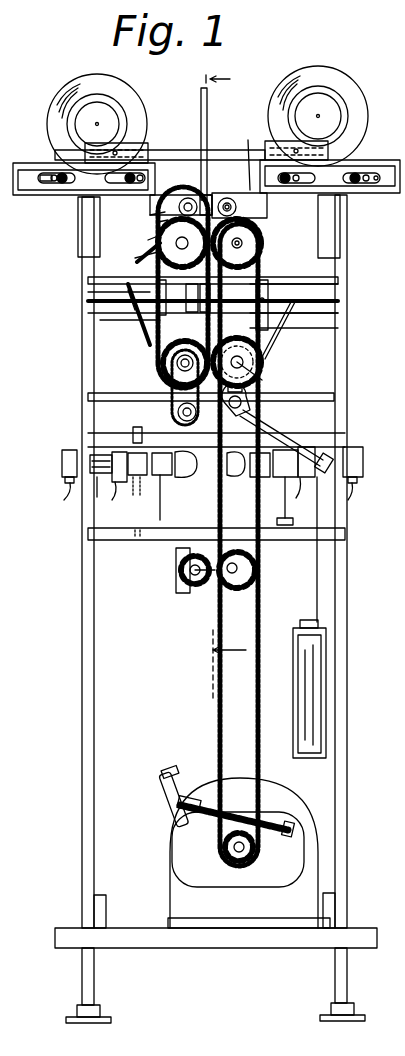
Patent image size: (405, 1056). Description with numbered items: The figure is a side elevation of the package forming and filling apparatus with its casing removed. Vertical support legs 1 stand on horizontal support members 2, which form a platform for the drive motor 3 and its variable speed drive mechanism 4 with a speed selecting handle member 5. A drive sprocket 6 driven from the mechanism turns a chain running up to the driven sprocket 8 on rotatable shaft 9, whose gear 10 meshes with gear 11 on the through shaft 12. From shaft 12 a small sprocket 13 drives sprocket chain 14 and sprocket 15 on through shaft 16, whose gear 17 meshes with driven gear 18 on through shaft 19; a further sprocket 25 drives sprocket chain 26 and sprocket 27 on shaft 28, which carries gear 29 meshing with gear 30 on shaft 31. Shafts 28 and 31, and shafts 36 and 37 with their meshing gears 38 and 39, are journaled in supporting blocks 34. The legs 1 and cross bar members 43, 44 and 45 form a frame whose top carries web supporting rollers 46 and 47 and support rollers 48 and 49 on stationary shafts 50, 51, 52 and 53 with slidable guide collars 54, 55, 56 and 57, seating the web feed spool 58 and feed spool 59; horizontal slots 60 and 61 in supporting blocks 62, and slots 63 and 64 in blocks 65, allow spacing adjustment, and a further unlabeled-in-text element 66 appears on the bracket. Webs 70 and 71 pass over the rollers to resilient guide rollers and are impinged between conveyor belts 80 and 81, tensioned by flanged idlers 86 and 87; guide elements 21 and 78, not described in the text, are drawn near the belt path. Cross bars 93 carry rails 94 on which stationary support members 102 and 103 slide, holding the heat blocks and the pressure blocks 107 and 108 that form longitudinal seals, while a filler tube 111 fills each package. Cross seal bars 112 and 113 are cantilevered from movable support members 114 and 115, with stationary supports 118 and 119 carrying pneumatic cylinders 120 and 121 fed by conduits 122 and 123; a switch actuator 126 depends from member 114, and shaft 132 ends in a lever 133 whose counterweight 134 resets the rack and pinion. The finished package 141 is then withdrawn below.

The vertical support legs 1 is at (82, 742).
The horizontal support members 2 is at (80, 208).
The drive motor 3 is at (210, 790).
The variable speed drive mechanism 4 is at (185, 841).
The speed selecting handle member 5 is at (170, 790).
The drive sprocket 6 is at (222, 848).
The driven sprocket 8 is at (262, 364).
The rotatable shaft 9 is at (262, 380).
The gear 10 is at (272, 356).
The gear 11 is at (163, 360).
The through shaft 12 is at (177, 366).
The sprocket 13 is at (150, 335).
The sprocket chain 14 is at (178, 552).
The sprocket 15 is at (188, 568).
The through shaft 16 is at (190, 582).
The gear 17 is at (205, 585).
The driven gear 18 is at (245, 558).
The rotatable through shaft 19 is at (238, 568).
The guide 21 is at (215, 297).
The sprocket 25 is at (170, 378).
The sprocket chain 26 is at (178, 398).
The sprocket 27 is at (162, 222).
The shaft 28 is at (160, 213).
The gear 29 is at (142, 178).
The gear 30 is at (215, 195).
The shaft 31 is at (237, 207).
The supporting blocks 34 is at (150, 240).
The shaft 36 is at (138, 258).
The shaft 37 is at (243, 241).
The gear 38 is at (136, 257).
The gear 39 is at (250, 252).
The cross bar members 43 is at (108, 535).
The cross bar member 44 is at (98, 398).
The cross bar member 45 is at (96, 285).
The web supporting roller 46 is at (52, 182).
The web supporting roller 47 is at (82, 240).
The support roller 48 is at (297, 182).
The support roller 49 is at (372, 195).
The stationary shaft 50 is at (50, 190).
The stationary shaft 51 is at (134, 176).
The stationary shaft 52 is at (288, 176).
The stationary shaft 53 is at (360, 172).
The slidable guide collar 54 is at (55, 173).
The slidable guide collar 55 is at (186, 196).
The slidable guide collar 56 is at (248, 172).
The slidable guide collar 57 is at (366, 182).
The web feed spool 58 is at (70, 105).
The feed spool 59 is at (350, 108).
The horizontal slot 60 is at (58, 176).
The horizontal slot 61 is at (125, 150).
The supporting blocks 62 is at (70, 125).
The slot 63 is at (330, 112).
The slot 64 is at (360, 177).
The blocks 65 is at (340, 150).
The bolt 66 is at (380, 230).
The web 70 is at (190, 243).
The web 71 is at (258, 156).
The guide 78 is at (197, 297).
The conveyor belts 80 is at (140, 312).
The conveyor belt 81 is at (335, 314).
The flanged idler 86 is at (92, 299).
The flanged idler 87 is at (336, 285).
The cross bars 93 is at (92, 308).
The rails 94 is at (130, 292).
The stationary support member 102 is at (160, 322).
The stationary support member 103 is at (335, 329).
The pressure block 107 is at (188, 291).
The pressure block 108 is at (272, 280).
The filler tube 111 is at (207, 100).
The cross seal bar 112 is at (186, 478).
The cross seal bar 113 is at (236, 478).
The laterally movable support member 114 is at (158, 478).
The laterally movable support member 115 is at (263, 478).
The stationary support 118 is at (117, 498).
The stationary support 119 is at (290, 478).
The pneumatic cylinder 120 is at (90, 452).
The pneumatic cylinder 121 is at (364, 452).
The conduit 122 is at (66, 490).
The conduit 123 is at (110, 492).
The switch actuator 126 is at (162, 502).
The shaft 132 is at (260, 400).
The lever 133 is at (280, 422).
The counterweight 134 is at (326, 655).
The finished package 141 is at (218, 618).